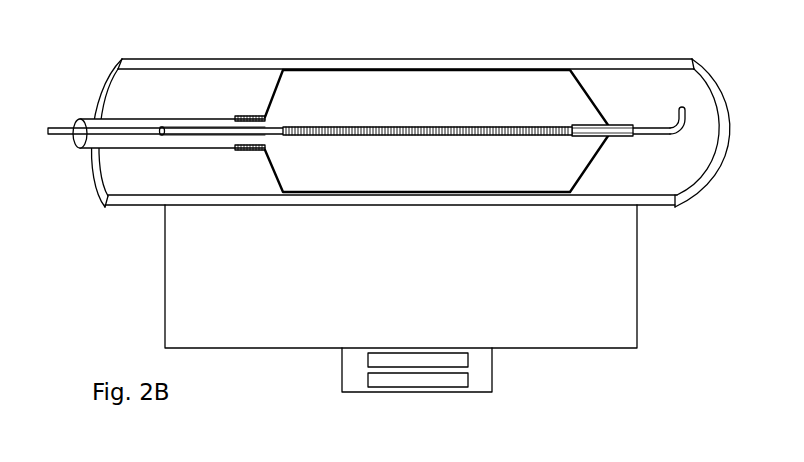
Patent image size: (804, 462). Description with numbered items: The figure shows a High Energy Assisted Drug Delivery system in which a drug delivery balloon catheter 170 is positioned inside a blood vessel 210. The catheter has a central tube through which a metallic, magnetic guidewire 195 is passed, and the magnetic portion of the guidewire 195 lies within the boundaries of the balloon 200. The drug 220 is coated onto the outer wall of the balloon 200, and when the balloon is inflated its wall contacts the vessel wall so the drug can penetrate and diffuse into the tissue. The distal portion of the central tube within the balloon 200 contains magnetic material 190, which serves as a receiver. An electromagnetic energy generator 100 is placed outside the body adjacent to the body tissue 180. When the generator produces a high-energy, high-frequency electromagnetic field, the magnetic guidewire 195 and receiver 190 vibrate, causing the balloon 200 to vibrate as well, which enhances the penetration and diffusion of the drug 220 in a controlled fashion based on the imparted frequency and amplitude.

The electromagnetic energy generator 100 is at (362, 358).
The drug delivery balloon catheter 170 is at (178, 148).
The body tissue 180 is at (557, 318).
The magnetic material 190 is at (372, 128).
The guidewire 195 is at (62, 133).
The balloon 200 is at (493, 98).
The blood vessel 210 is at (388, 67).
The drug 220 is at (450, 70).